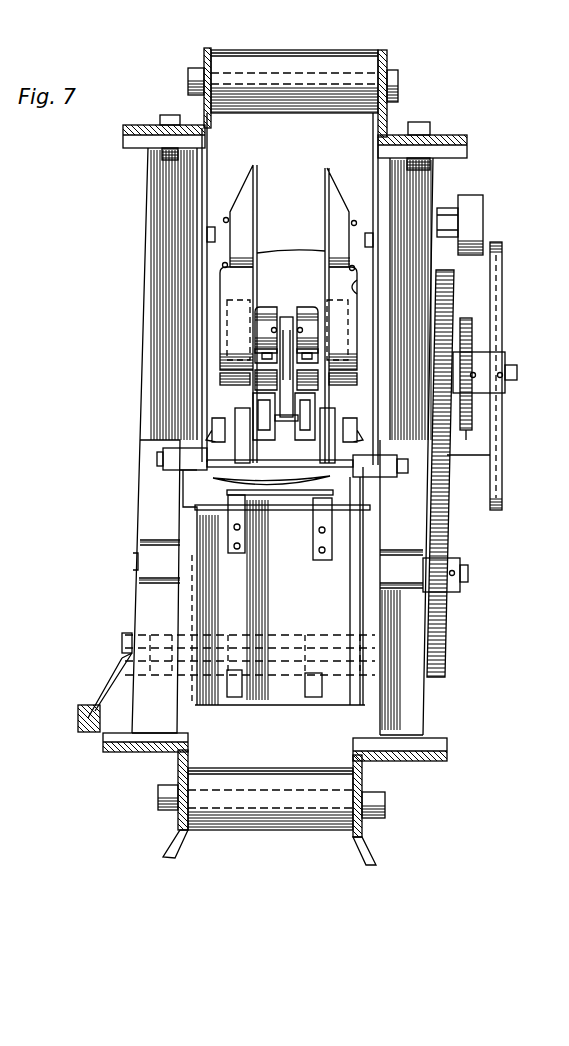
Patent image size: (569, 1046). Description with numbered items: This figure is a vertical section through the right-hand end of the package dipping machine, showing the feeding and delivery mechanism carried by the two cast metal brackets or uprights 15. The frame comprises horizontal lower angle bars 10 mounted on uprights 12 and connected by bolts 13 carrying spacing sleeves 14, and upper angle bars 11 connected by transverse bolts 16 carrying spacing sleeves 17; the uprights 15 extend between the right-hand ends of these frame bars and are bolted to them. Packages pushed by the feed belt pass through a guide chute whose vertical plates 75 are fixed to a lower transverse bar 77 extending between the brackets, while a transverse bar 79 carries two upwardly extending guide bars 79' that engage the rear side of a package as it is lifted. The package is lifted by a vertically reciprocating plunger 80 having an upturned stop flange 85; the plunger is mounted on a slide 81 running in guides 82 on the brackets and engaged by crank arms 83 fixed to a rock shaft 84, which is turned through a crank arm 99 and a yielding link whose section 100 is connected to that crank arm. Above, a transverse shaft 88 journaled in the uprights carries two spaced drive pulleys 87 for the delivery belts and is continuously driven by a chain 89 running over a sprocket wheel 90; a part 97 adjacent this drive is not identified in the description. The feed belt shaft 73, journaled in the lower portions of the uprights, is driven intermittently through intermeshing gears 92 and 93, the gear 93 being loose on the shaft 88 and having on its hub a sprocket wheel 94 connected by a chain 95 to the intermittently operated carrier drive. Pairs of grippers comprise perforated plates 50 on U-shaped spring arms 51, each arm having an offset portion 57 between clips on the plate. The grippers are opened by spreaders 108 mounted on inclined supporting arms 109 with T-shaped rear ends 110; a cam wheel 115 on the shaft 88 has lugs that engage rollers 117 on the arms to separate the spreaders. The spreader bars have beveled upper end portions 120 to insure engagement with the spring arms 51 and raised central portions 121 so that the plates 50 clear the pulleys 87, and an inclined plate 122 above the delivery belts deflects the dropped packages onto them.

The horizontal lower angle bars 10 is at (245, 768).
The upper angle bars 11 is at (204, 52).
The uprights 12 is at (177, 848).
The bolts 13 is at (300, 826).
The spacing sleeves 14 is at (243, 818).
The cast metal brackets or uprights 15 is at (155, 252).
The transverse bolts 16 is at (399, 82).
The spacing sleeves 17 is at (304, 58).
The gripper plates 50 is at (163, 453).
The spring arms 51 is at (223, 264).
The offset portion of spring arm 57 is at (340, 365).
The shaft 73 is at (470, 568).
The vertical plates or bars 75 is at (260, 494).
The lower horizontal transverse bar 77 is at (345, 520).
The transverse bar 79 is at (326, 435).
The guide bars 79' is at (271, 466).
The feeder or plunger 80 is at (261, 498).
The slide 81 is at (327, 616).
The guides 82 is at (192, 604).
The crank arms 83 is at (312, 700).
The transverse rock shaft 84 is at (122, 650).
The stop flange 85 is at (258, 556).
The drive pulleys 87 is at (212, 425).
The transverse shaft 88 is at (518, 372).
The chain 89 is at (503, 248).
The sprocket wheel 90 is at (503, 297).
The gear 92 is at (447, 632).
The gear 93 is at (490, 455).
The sprocket wheel 94 is at (470, 410).
The chain 95 is at (473, 323).
The pulley 97 is at (470, 212).
The crank arm 99 is at (105, 681).
The link section 100 is at (88, 728).
The spreaders 108 is at (335, 235).
The inclined supporting arms 109 is at (312, 307).
The T-shaped rear ends 110 is at (280, 372).
The cam wheel 115 is at (293, 390).
The rollers 117 is at (297, 332).
The beveled upper end portions 120 is at (333, 195).
The raised central portions 121 is at (222, 280).
The inclined plate 122 is at (372, 246).